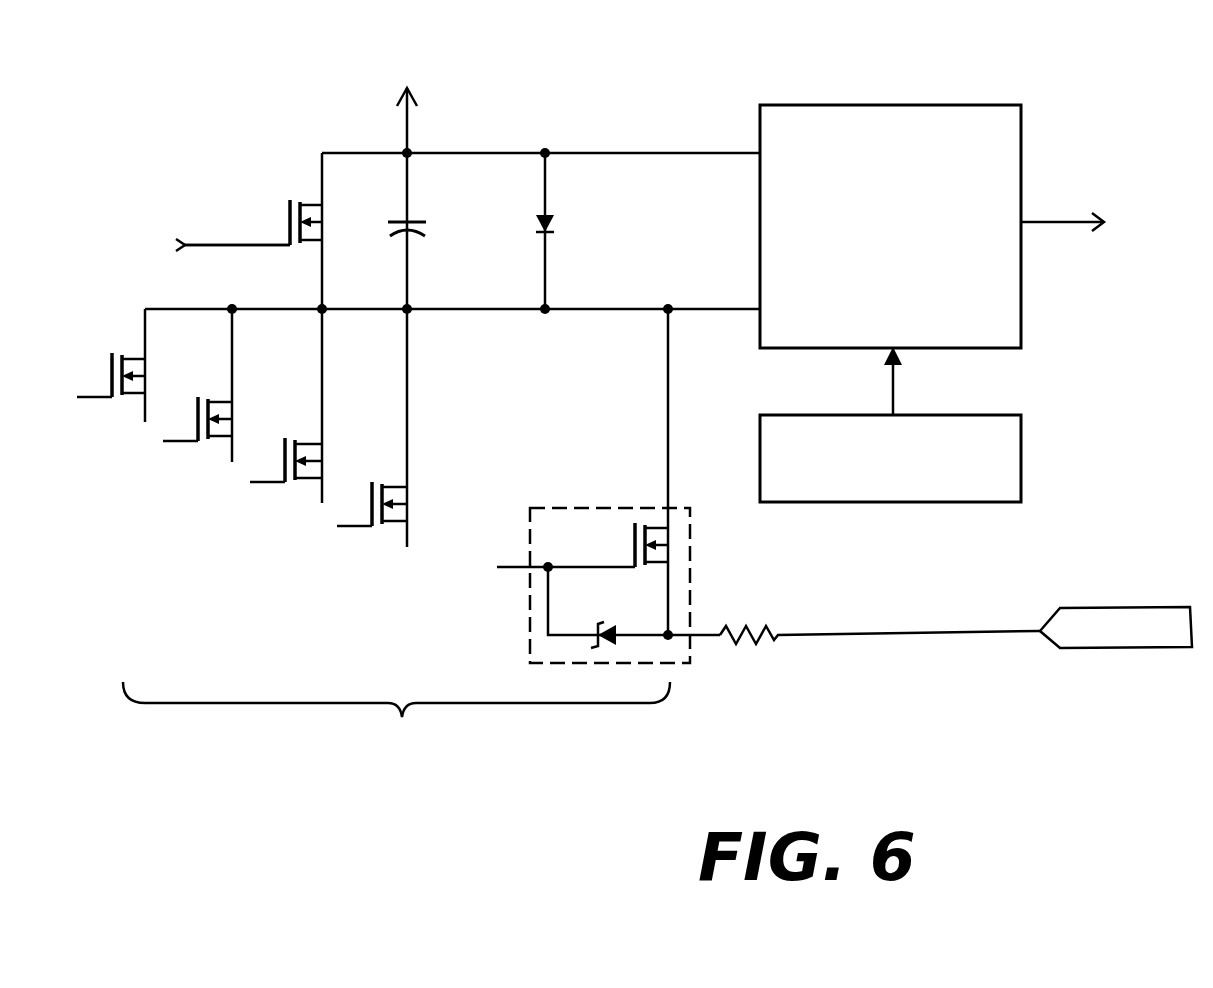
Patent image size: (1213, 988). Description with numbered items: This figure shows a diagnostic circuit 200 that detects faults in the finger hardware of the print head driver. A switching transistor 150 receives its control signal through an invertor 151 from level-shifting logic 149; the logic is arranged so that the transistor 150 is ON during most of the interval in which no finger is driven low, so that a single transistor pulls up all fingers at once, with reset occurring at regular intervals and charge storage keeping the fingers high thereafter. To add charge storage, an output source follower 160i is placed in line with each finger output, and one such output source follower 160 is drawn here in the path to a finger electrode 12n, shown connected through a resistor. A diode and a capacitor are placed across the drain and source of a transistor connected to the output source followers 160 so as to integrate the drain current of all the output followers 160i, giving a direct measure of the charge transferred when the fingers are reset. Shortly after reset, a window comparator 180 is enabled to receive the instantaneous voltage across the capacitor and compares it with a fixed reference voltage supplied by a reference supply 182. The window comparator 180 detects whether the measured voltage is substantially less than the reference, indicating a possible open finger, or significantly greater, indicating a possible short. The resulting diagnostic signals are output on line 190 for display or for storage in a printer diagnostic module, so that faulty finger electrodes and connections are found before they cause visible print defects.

The diagnostic circuit 200 is at (660, 62).
The switching transistor 150 is at (295, 190).
The level-shifting logic 149 is at (187, 257).
The invertor 151 is at (233, 245).
The output source followers 160 is at (692, 579).
The output source follower 160i is at (396, 743).
The window comparator 180 is at (965, 311).
The reference supply 182 is at (1000, 446).
The line 190 is at (1050, 222).
The finger electrode 12n is at (1107, 607).